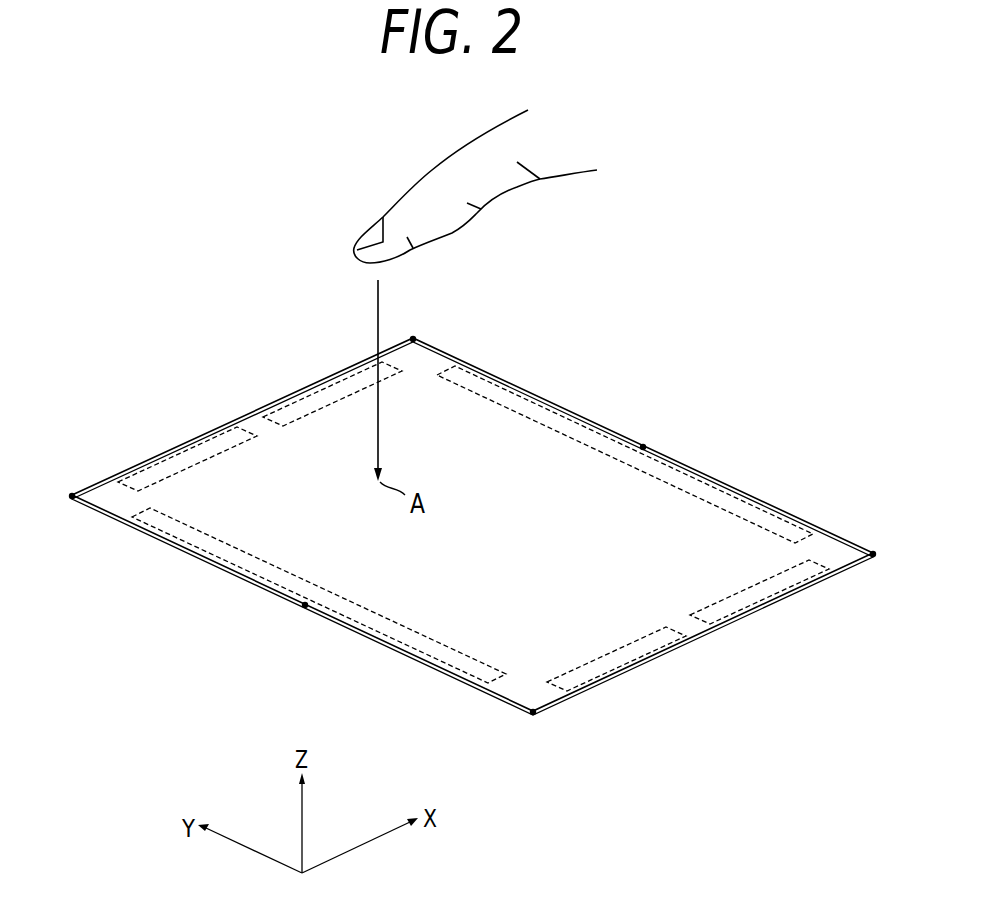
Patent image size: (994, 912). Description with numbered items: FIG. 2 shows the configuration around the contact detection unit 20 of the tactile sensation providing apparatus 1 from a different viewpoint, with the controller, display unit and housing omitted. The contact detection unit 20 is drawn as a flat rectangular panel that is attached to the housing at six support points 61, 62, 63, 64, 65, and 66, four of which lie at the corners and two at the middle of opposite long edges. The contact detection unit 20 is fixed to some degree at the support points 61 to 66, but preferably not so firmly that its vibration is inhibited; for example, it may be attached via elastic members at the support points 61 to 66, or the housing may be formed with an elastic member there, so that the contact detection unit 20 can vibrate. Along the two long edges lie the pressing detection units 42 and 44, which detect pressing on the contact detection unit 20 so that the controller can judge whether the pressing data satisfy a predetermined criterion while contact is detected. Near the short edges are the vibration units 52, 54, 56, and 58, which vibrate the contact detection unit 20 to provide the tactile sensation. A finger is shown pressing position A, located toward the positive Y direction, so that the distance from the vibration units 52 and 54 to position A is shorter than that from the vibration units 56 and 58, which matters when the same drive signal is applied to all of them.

The tactile sensation providing apparatus 1 is at (590, 333).
The contact detection unit 20 is at (167, 545).
The pressing detection unit 42 is at (707, 478).
The pressing detection unit 44 is at (235, 567).
The vibration unit 52 is at (183, 453).
The vibration unit 54 is at (322, 388).
The vibration unit 56 is at (640, 663).
The vibration unit 58 is at (775, 595).
The support point 61 is at (72, 495).
The support point 62 is at (305, 605).
The support point 63 is at (533, 711).
The support point 64 is at (413, 338).
The support point 65 is at (643, 447).
The support point 66 is at (873, 553).